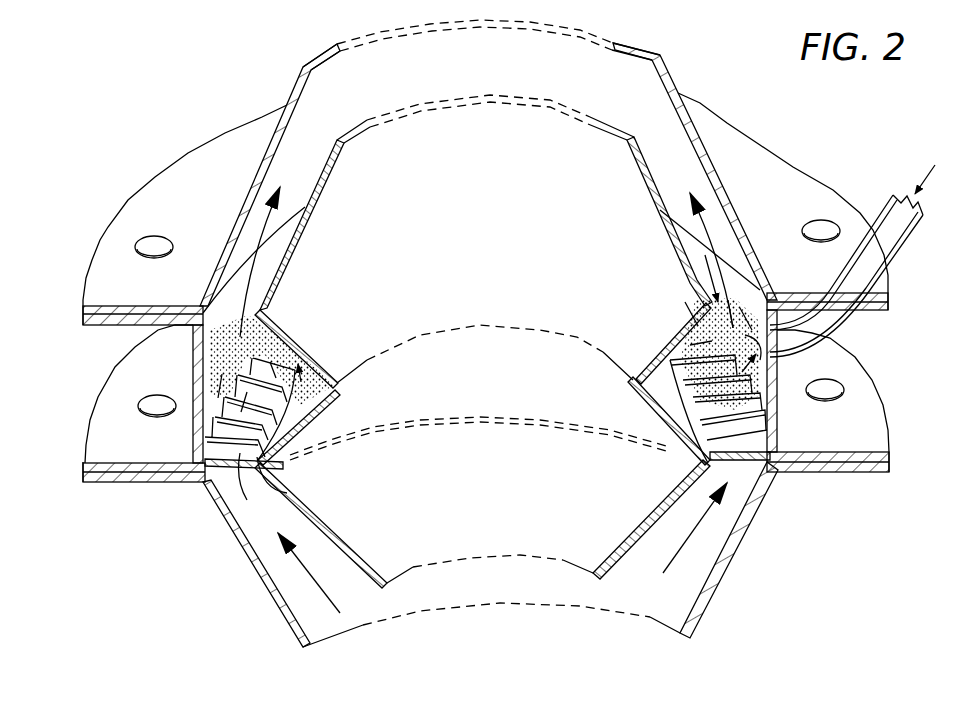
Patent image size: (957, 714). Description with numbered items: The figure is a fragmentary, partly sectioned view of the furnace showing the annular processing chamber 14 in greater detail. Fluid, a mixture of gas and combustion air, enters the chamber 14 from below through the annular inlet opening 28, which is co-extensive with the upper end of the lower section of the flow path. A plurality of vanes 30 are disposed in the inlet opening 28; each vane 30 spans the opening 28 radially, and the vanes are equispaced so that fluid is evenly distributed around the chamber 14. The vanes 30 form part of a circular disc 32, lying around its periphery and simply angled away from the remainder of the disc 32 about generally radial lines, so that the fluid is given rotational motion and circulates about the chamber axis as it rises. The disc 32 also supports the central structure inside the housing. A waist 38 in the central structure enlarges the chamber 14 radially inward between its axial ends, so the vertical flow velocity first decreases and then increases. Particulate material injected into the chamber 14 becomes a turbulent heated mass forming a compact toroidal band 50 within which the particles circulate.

The annular processing chamber 14 is at (203, 410).
The annular inlet opening 28 is at (220, 473).
The vanes 30 is at (290, 495).
The circular disc 32 is at (317, 440).
The waist 38 is at (340, 385).
The compact toroidal band 50 is at (270, 343).